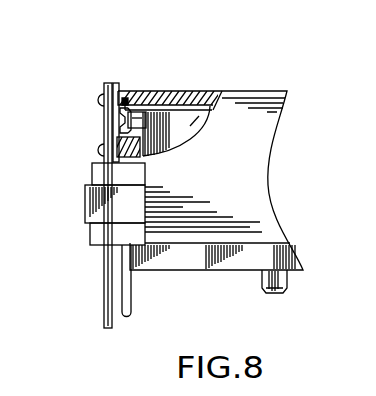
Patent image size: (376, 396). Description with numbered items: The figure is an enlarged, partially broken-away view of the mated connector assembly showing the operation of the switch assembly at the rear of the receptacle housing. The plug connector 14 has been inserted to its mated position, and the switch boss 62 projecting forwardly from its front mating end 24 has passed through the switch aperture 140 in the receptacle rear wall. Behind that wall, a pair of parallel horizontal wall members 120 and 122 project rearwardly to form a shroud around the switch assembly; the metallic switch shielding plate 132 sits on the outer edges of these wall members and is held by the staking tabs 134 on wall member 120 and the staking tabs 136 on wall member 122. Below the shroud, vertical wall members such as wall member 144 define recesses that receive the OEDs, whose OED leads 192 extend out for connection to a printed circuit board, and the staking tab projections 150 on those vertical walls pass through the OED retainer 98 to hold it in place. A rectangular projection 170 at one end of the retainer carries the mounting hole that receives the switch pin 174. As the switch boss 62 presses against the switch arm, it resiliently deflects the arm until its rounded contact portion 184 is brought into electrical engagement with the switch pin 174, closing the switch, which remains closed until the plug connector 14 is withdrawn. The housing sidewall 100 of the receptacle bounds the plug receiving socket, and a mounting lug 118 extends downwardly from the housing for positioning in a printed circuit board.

The plug connector 14 is at (222, 98).
The front mating end 24 is at (181, 112).
The switch boss 62 is at (170, 92).
The OED retainer 98 is at (92, 175).
The housing sidewall 100 is at (277, 216).
The mounting lug 118 is at (284, 290).
The wall member 120 is at (118, 86).
The wall member 122 is at (117, 145).
The switch shielding plate 132 is at (100, 117).
The staking tabs 134 is at (97, 100).
The staking tabs 136 is at (97, 151).
The switch aperture 140 is at (128, 95).
The vertical wall member 144 is at (204, 264).
The staking tab projections 150 is at (85, 200).
The rectangular projection 170 is at (102, 213).
The switch pin 174 is at (106, 291).
The rounded contact portion 184 is at (125, 99).
The OED leads 192 is at (131, 304).